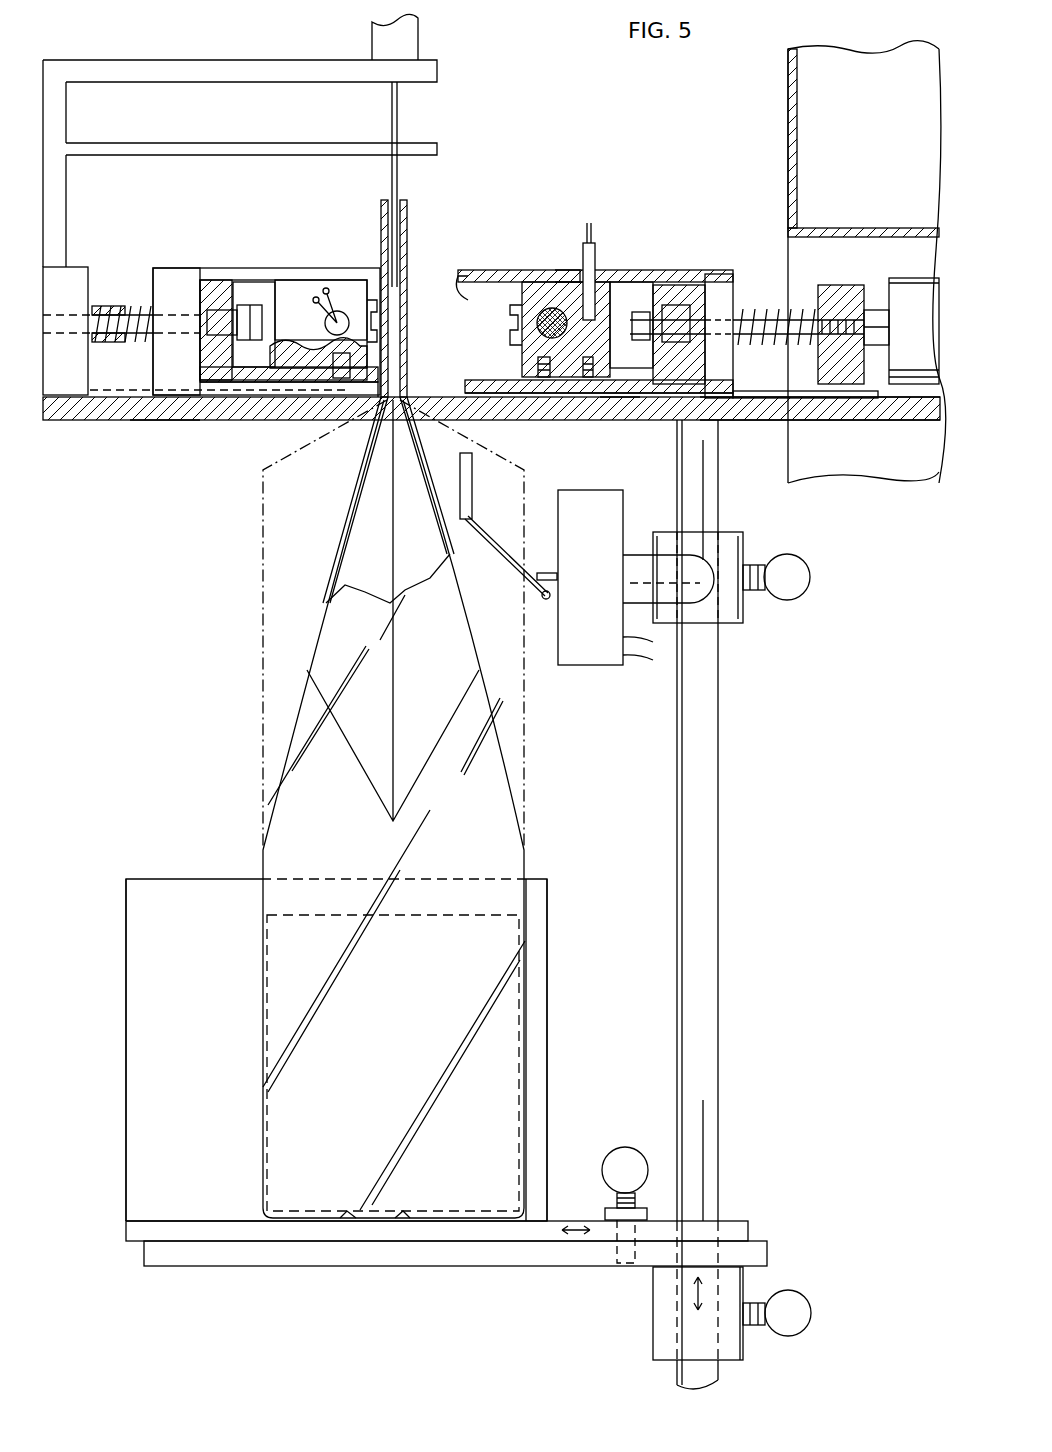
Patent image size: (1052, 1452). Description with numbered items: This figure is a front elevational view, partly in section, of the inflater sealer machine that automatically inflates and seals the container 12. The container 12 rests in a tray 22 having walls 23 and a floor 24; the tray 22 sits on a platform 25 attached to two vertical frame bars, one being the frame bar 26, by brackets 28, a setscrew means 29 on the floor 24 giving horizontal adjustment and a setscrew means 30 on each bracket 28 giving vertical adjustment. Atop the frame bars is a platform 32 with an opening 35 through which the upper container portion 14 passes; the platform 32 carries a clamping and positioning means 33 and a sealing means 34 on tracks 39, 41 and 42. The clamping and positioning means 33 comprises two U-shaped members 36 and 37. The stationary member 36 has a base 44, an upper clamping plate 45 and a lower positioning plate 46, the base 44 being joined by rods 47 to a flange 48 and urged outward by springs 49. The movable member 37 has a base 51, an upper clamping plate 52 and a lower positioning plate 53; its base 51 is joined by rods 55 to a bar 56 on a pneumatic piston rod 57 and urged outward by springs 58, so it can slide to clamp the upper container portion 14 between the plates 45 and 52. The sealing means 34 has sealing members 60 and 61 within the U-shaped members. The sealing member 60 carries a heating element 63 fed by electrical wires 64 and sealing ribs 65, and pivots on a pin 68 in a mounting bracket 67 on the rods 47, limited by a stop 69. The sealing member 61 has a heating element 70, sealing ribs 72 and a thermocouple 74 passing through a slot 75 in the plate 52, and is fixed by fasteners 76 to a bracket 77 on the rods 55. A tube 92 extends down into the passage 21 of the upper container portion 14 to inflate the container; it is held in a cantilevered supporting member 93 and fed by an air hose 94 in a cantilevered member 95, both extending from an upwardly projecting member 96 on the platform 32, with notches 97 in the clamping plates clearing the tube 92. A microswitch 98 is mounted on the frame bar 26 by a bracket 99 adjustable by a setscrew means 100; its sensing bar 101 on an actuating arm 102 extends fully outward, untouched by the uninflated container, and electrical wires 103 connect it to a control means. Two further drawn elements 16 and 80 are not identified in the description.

The container 12 is at (533, 833).
The upper container portion 14 is at (381, 232).
The package 16 is at (287, 1117).
The passage 21 is at (390, 202).
The tray 22 is at (187, 870).
The walls 23 is at (138, 1064).
The floor 24 is at (222, 1243).
The platform 25 is at (385, 1268).
The vertical frame bar 26 is at (720, 992).
The bracket 28 is at (660, 1338).
The setscrew means 29 is at (618, 1160).
The setscrew means 30 is at (794, 1302).
The platform 32 is at (745, 420).
The clamping and positioning means 33 is at (453, 248).
The sealing means 34 is at (450, 310).
The opening 35 is at (465, 387).
The clamping and positioning member 36 is at (210, 267).
The clamping and positioning member 37 is at (649, 268).
The track 39 is at (112, 420).
The track 41 is at (613, 398).
The track 42 is at (158, 420).
The base 44 is at (160, 268).
The upper clamping plate 45 is at (285, 278).
The lower positioning plate 46 is at (215, 392).
The rods 47 is at (110, 300).
The flange 48 is at (75, 267).
The springs 49 is at (133, 348).
The base 51 is at (720, 274).
The upper clamping plate 52 is at (505, 270).
The lower positioning plate 53 is at (568, 398).
The rods 55 is at (752, 305).
The bar 56 is at (836, 285).
The pneumatic piston rod 57 is at (875, 310).
The springs 58 is at (744, 391).
The sealing member 60 is at (350, 290).
The sealing member 61 is at (545, 282).
The heating element 63 is at (330, 343).
The electrical wires 64 is at (331, 289).
The sealing ribs 65 is at (377, 318).
The mounting bracket 67 is at (288, 378).
The pin 68 is at (343, 378).
The stop 69 is at (256, 290).
The heating element 70 is at (538, 366).
The sealing ribs 72 is at (510, 318).
The thermocouple 74 is at (595, 246).
The slot 75 is at (562, 270).
The fasteners 76 is at (586, 357).
The bracket 77 is at (665, 384).
The frame wall 80 is at (925, 261).
The tube 92 is at (398, 182).
The cantilevered supporting member 93 is at (243, 148).
The air hose 94 is at (413, 35).
The cantilevered member 95 is at (268, 72).
The upwardly projecting member 96 is at (50, 172).
The notches 97 is at (466, 296).
The microswitch 98 is at (598, 668).
The bracket 99 is at (745, 545).
The setscrew means 100 is at (800, 590).
The sensing bar 101 is at (473, 484).
The actuating arm 102 is at (510, 562).
The electrical wires 103 is at (645, 660).